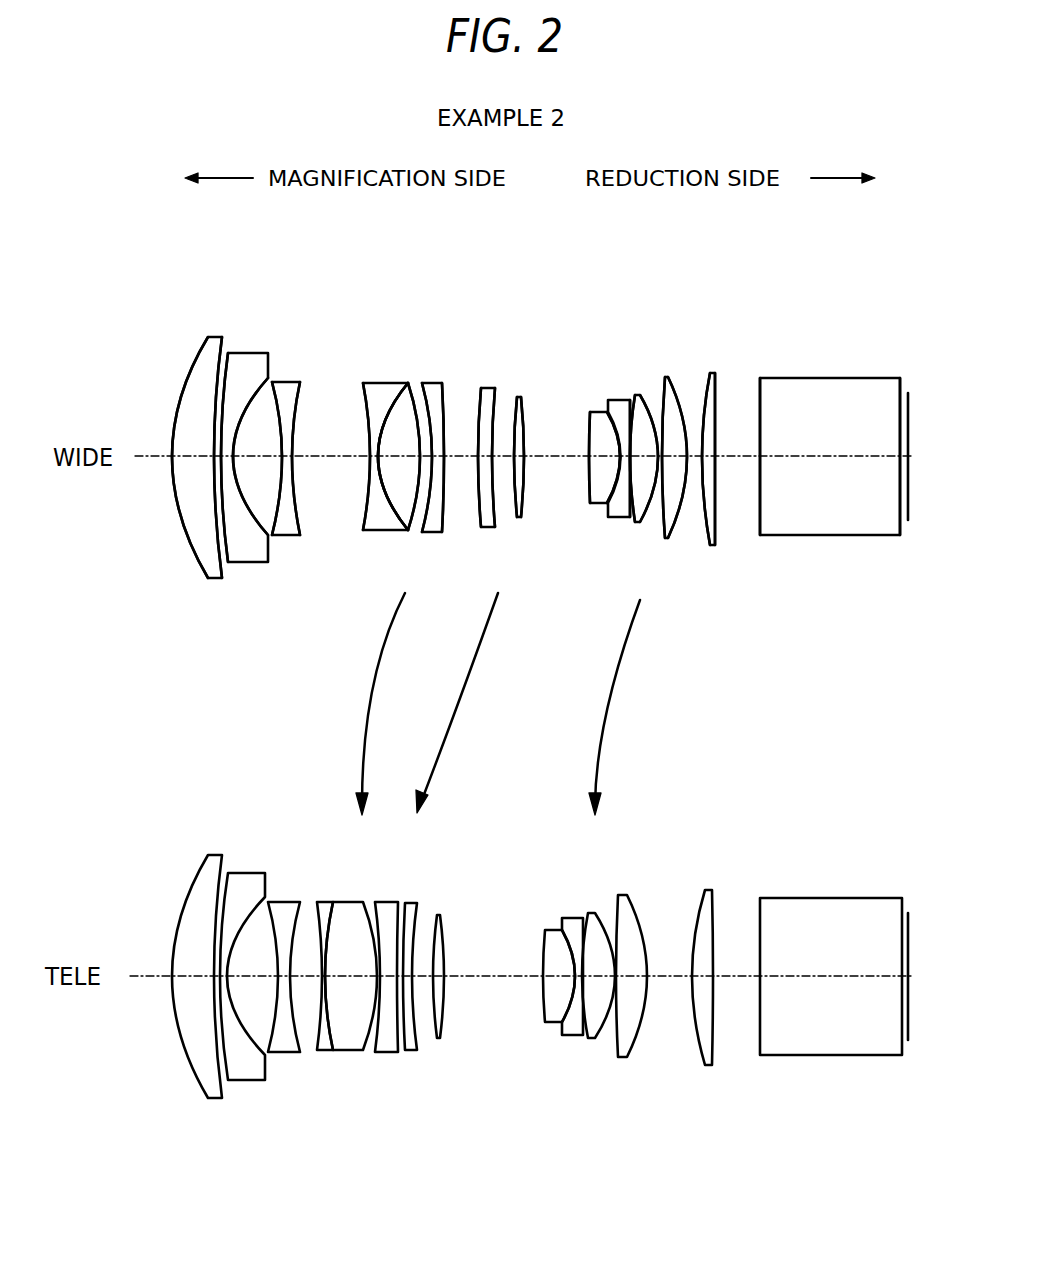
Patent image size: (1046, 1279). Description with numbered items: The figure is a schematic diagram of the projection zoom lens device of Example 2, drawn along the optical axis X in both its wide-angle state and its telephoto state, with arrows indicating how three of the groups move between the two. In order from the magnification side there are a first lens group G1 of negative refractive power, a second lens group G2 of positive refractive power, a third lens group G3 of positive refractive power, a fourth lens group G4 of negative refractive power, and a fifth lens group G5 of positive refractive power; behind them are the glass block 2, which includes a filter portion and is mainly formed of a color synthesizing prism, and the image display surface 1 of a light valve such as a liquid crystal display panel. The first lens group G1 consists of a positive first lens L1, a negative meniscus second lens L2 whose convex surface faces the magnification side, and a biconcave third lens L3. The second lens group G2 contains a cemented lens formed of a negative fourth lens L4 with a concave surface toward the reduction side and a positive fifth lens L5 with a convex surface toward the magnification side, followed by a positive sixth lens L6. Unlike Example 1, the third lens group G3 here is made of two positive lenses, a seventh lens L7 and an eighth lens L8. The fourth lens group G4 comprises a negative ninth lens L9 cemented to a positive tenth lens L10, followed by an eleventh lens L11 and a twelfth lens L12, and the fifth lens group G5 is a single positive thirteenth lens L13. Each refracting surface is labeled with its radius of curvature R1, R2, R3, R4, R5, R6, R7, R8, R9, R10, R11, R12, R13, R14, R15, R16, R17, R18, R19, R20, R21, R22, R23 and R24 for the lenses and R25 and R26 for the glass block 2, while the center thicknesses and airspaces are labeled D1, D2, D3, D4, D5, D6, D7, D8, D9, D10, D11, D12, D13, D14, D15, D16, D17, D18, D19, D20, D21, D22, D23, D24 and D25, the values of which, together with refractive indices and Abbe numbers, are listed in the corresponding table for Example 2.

The first lens group G1 is at (300, 290).
The second lens group G2 is at (444, 290).
The third lens group G3 is at (534, 290).
The fourth lens group G4 is at (692, 290).
The fifth lens group G5 is at (730, 290).
The first lens L1 is at (190, 540).
The second lens L2 is at (237, 560).
The third lens L3 is at (290, 535).
The fourth lens L4 is at (366, 532).
The fifth lens L5 is at (405, 531).
The sixth lens L6 is at (445, 533).
The seventh lens L7 is at (490, 529).
The eighth lens L8 is at (520, 519).
The ninth lens L9 is at (598, 505).
The tenth lens L10 is at (618, 520).
The eleventh lens L11 is at (640, 525).
The twelfth lens L12 is at (688, 539).
The thirteenth lens L13 is at (718, 540).
The radius of curvature of lens surface R1 is at (180, 395).
The radius of curvature of lens surface R2 is at (221, 345).
The radius of curvature of lens surface R3 is at (229, 362).
The radius of curvature of lens surface R4 is at (260, 385).
The radius of curvature of lens surface R5 is at (278, 383).
The radius of curvature of lens surface R6 is at (300, 398).
The radius of curvature of lens surface R7 is at (363, 392).
The radius of curvature of lens surface R8 is at (395, 395).
The radius of curvature of lens surface R9 is at (410, 385).
The radius of curvature of lens surface R10 is at (430, 390).
The radius of curvature of lens surface R11 is at (443, 385).
The radius of curvature of lens surface R12 is at (481, 395).
The radius of curvature of lens surface R13 is at (495, 392).
The radius of curvature of lens surface R14 is at (516, 400).
The radius of curvature of lens surface R15 is at (522, 412).
The radius of curvature of lens surface R16 is at (592, 418).
The radius of curvature of lens surface R17 is at (610, 410).
The radius of curvature of lens surface R18 is at (630, 398).
The radius of curvature of lens surface R19 is at (640, 393).
The radius of curvature of lens surface R20 is at (663, 392).
The radius of curvature of lens surface R21 is at (672, 380).
The radius of curvature of lens surface R22 is at (690, 375).
The radius of curvature of lens surface R23 is at (704, 380).
The radius of curvature of lens surface R24 is at (714, 375).
The radius of curvature of lens surface R25 is at (760, 380).
The radius of curvature of lens surface R26 is at (900, 378).
The center thickness or airspace D1 is at (185, 452).
The center thickness or airspace D2 is at (215, 462).
The center thickness or airspace D3 is at (226, 462).
The center thickness or airspace D4 is at (243, 456).
The center thickness or airspace D5 is at (289, 462).
The center thickness or airspace D6 is at (348, 425).
The center thickness or airspace D7 is at (380, 457).
The center thickness or airspace D8 is at (392, 463).
The center thickness or airspace D9 is at (417, 457).
The center thickness or airspace D10 is at (422, 478).
The center thickness or airspace D11 is at (455, 462).
The center thickness or airspace D12 is at (470, 468).
The center thickness or airspace D13 is at (500, 465).
The center thickness or airspace D14 is at (520, 455).
The center thickness or airspace D15 is at (552, 460).
The center thickness or airspace D16 is at (600, 462).
The center thickness or airspace D17 is at (605, 470).
The center thickness or airspace D18 is at (613, 470).
The center thickness or airspace D19 is at (630, 480).
The center thickness or airspace D20 is at (668, 470).
The center thickness or airspace D21 is at (703, 470).
The center thickness or airspace D22 is at (716, 465).
The center thickness or airspace D23 is at (712, 448).
The center thickness or airspace D24 is at (718, 456).
The center thickness or airspace D25 is at (795, 456).
The optical axis X is at (342, 399).
The image display surface 1 is at (911, 478).
The glass block 2 is at (833, 537).